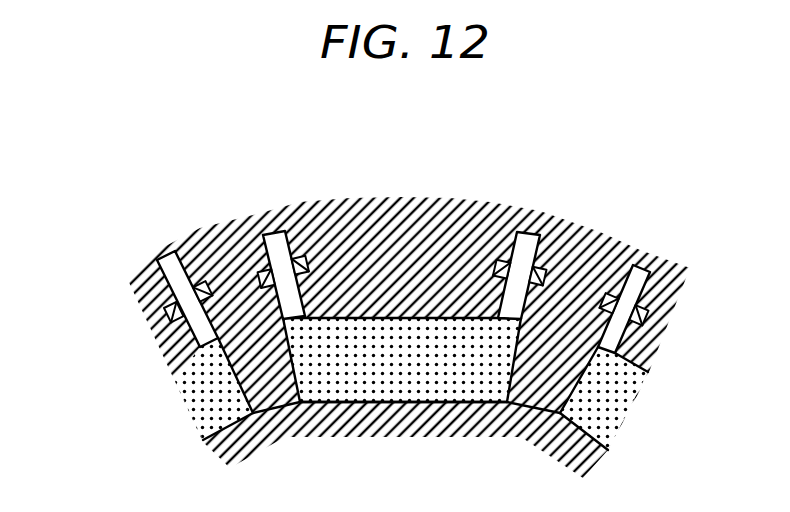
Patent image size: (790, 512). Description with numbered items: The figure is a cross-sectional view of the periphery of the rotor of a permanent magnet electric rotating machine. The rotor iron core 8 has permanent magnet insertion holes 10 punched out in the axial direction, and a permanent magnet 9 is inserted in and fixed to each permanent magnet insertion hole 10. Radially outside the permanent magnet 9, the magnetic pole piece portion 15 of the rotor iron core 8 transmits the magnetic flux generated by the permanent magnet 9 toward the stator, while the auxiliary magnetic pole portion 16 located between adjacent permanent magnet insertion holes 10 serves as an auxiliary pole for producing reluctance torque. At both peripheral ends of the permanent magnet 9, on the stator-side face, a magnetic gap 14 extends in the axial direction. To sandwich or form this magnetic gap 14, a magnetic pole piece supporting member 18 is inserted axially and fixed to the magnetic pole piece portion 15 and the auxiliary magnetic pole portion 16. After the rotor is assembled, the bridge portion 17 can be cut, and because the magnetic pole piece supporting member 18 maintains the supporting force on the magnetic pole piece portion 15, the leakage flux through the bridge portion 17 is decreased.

The rotor iron core 8 is at (511, 476).
The permanent magnet 9 is at (402, 399).
The permanent magnet insertion hole 10 is at (406, 443).
The magnetic gap 14 is at (403, 244).
The magnetic pole piece portion 15 is at (400, 211).
The auxiliary magnetic pole portion 16 is at (396, 197).
The bridge portion 17 is at (425, 198).
The magnetic pole piece supporting member 18 is at (414, 225).